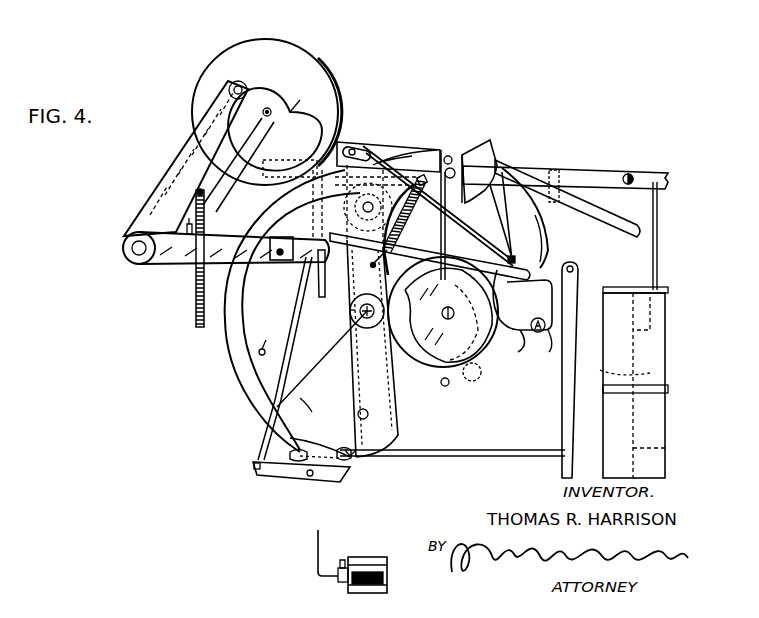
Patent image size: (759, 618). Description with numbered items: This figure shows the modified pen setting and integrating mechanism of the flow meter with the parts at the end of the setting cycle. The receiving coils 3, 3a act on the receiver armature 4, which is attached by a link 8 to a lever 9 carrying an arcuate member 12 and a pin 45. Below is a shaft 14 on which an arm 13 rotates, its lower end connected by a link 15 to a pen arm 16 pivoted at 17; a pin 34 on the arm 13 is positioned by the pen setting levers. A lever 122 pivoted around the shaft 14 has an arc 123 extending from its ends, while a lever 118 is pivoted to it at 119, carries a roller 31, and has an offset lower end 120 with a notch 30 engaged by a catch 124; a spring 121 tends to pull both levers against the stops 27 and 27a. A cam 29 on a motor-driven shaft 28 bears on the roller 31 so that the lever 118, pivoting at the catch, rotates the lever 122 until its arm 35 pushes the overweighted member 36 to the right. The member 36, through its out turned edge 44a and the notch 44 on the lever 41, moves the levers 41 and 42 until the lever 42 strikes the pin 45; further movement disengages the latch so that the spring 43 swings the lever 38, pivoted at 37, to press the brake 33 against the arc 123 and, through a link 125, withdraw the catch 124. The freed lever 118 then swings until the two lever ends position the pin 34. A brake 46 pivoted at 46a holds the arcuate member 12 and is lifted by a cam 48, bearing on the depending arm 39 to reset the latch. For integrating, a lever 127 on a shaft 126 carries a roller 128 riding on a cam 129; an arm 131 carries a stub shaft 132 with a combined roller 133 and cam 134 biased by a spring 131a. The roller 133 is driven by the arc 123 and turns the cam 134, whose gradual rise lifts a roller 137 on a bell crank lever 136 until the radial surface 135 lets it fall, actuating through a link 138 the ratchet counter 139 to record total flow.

The receiving coil 3 is at (612, 347).
The receiving coil 3a is at (612, 443).
The receiver armature 4 is at (616, 368).
The link 8 is at (658, 247).
The lever 9 is at (578, 172).
The arcuate member 12 is at (554, 172).
The arm 13 is at (373, 410).
The shaft 14 is at (350, 310).
The link 15 is at (505, 450).
The pen arm 16 is at (575, 320).
The pivot 17 is at (574, 268).
The stop 27 is at (446, 388).
The stop 27a is at (270, 338).
The shaft 28 is at (437, 358).
The cam 29 is at (443, 368).
The notch 30 is at (309, 451).
The roller 31 is at (351, 319).
The brake 33 is at (398, 160).
The pin 34 is at (370, 417).
The arm 35 is at (500, 238).
The overweighted member 36 is at (484, 150).
The pivot 37 is at (352, 146).
The lever 38 is at (425, 150).
The depending arm 39 is at (416, 209).
The lever 41 is at (453, 160).
The lever 42 is at (567, 198).
The spring 43 is at (357, 207).
The notch 44 is at (506, 297).
The out turned edge 44a is at (552, 238).
The pin 45 is at (628, 174).
The brake 46 is at (540, 285).
The pivot 46a is at (549, 352).
The cam 48 is at (474, 376).
The lever 118 is at (372, 372).
The pivot 119 is at (385, 162).
The offset portion 120 is at (353, 460).
The spring 121 is at (347, 237).
The lever 122 is at (312, 412).
The arc 123 is at (226, 333).
The catch 124 is at (345, 480).
The link 125 is at (262, 432).
The shaft 126 is at (137, 262).
The lever 127 is at (189, 236).
The roller 128 is at (503, 216).
The cam 129 is at (536, 332).
The arm 131 is at (224, 148).
The spring 131a is at (196, 307).
The stub shaft 132 is at (268, 106).
The roller 133 is at (224, 66).
The cam 134 is at (340, 108).
The radial surface 135 is at (292, 110).
The bell crank lever 136 is at (178, 180).
The roller 137 is at (229, 89).
The link 138 is at (318, 282).
The ratchet counter 139 is at (370, 556).